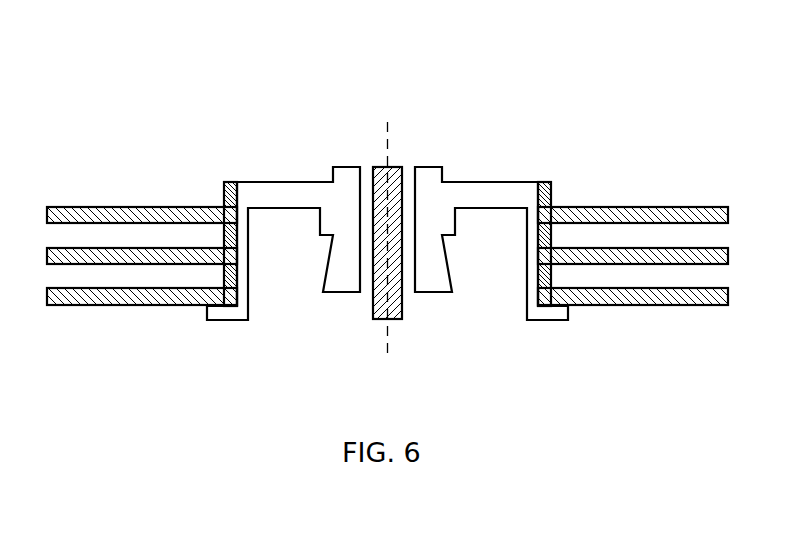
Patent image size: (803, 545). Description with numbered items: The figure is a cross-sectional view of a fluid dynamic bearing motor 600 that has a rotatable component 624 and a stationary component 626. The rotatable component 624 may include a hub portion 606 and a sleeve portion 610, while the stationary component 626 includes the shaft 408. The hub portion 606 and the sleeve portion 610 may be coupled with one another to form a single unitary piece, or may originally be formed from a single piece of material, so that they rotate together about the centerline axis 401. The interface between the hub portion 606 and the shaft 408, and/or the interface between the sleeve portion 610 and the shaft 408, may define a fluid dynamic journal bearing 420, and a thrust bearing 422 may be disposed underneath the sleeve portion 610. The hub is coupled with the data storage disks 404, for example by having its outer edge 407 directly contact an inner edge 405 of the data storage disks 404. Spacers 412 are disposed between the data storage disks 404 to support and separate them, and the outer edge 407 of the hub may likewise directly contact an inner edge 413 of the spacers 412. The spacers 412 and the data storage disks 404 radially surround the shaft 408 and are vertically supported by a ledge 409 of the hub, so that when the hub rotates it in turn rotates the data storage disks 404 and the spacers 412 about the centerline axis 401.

The fluid dynamic bearing motor 600 is at (152, 73).
The centerline axis 401 is at (388, 132).
The data storage disks 404 is at (47, 212).
The inner edge of the data storage disks 405 is at (538, 254).
The outer edge of the hub 407 is at (545, 256).
The shaft 408 is at (385, 167).
The ledge 409 is at (558, 311).
The spacers 412 is at (224, 193).
The inner edge of the spacers 413 is at (527, 240).
The fluid dynamic journal bearing 420 is at (365, 296).
The thrust bearing 422 is at (331, 296).
The hub portion 606 is at (487, 182).
The sleeve portion 610 is at (427, 268).
The rotatable component 624 is at (442, 168).
The stationary component 626 is at (392, 168).